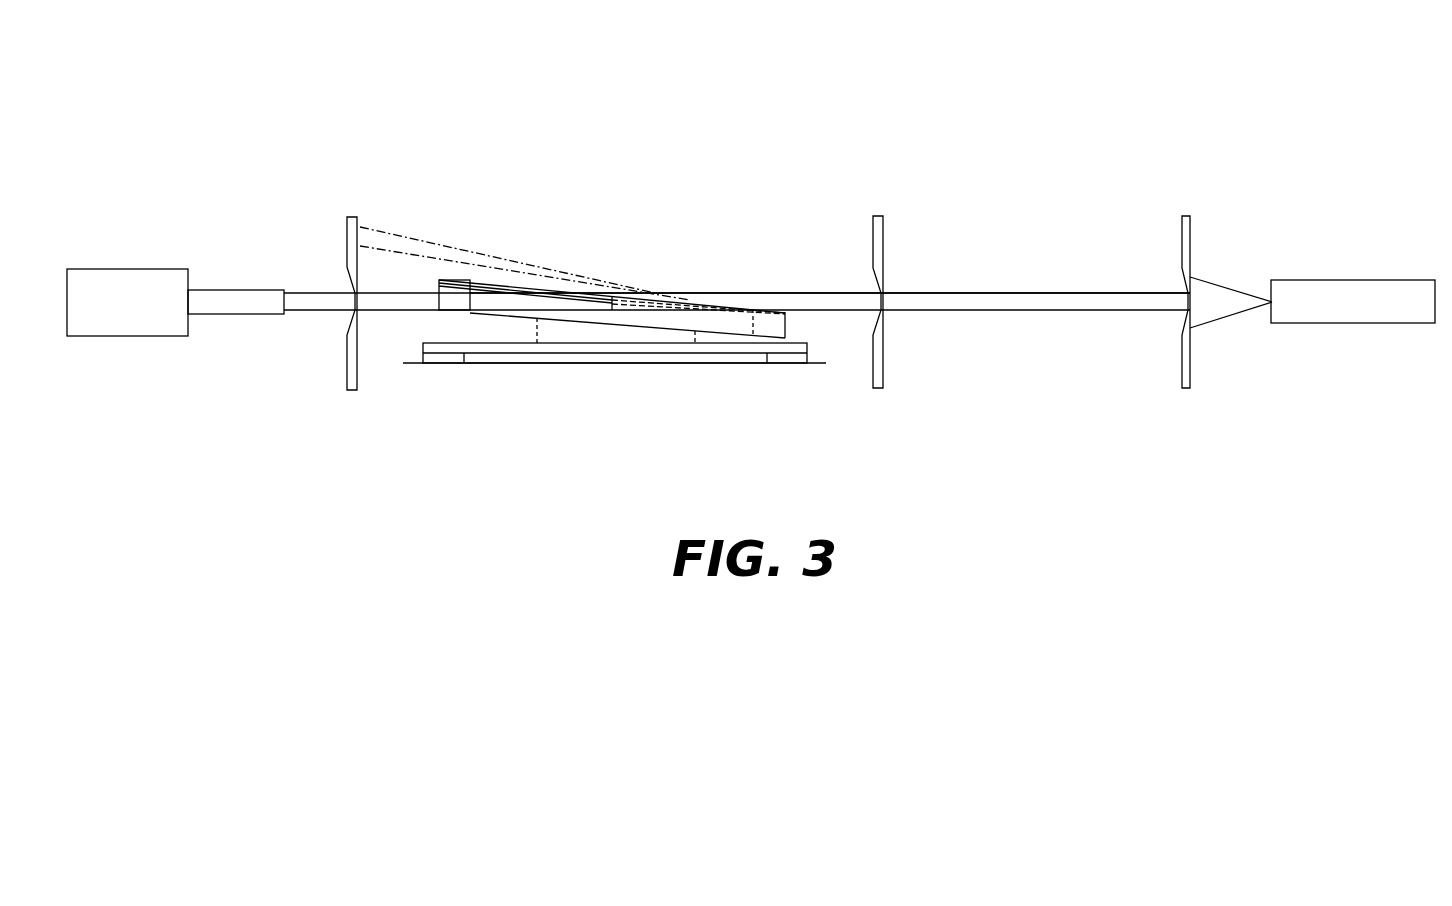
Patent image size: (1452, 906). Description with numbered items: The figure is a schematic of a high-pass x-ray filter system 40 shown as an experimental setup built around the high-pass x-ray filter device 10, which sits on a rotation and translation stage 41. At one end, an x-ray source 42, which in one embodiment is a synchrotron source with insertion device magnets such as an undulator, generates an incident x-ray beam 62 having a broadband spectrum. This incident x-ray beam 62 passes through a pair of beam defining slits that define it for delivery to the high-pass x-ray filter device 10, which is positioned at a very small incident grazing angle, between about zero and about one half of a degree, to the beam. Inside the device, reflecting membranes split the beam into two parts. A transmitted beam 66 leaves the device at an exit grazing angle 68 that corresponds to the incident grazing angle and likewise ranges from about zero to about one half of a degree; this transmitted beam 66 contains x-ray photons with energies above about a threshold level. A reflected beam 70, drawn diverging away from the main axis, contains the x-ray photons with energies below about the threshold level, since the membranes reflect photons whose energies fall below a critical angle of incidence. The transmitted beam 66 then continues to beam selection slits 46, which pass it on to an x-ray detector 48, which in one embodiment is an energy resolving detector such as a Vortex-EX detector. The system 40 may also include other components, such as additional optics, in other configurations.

The high-pass x-ray filter system 40 is at (312, 66).
The x-ray detector 48 is at (128, 280).
The transmitted beam 66 is at (316, 302).
The beam selection slits 46 is at (353, 217).
The reflected beam 70 is at (426, 250).
The high-pass x-ray filter device 10 is at (470, 318).
The exit grazing angle 68 is at (612, 303).
The incident x-ray beam 62 is at (680, 298).
The x-ray source 42 is at (1352, 288).
The rotation and translation stage 41 is at (612, 346).